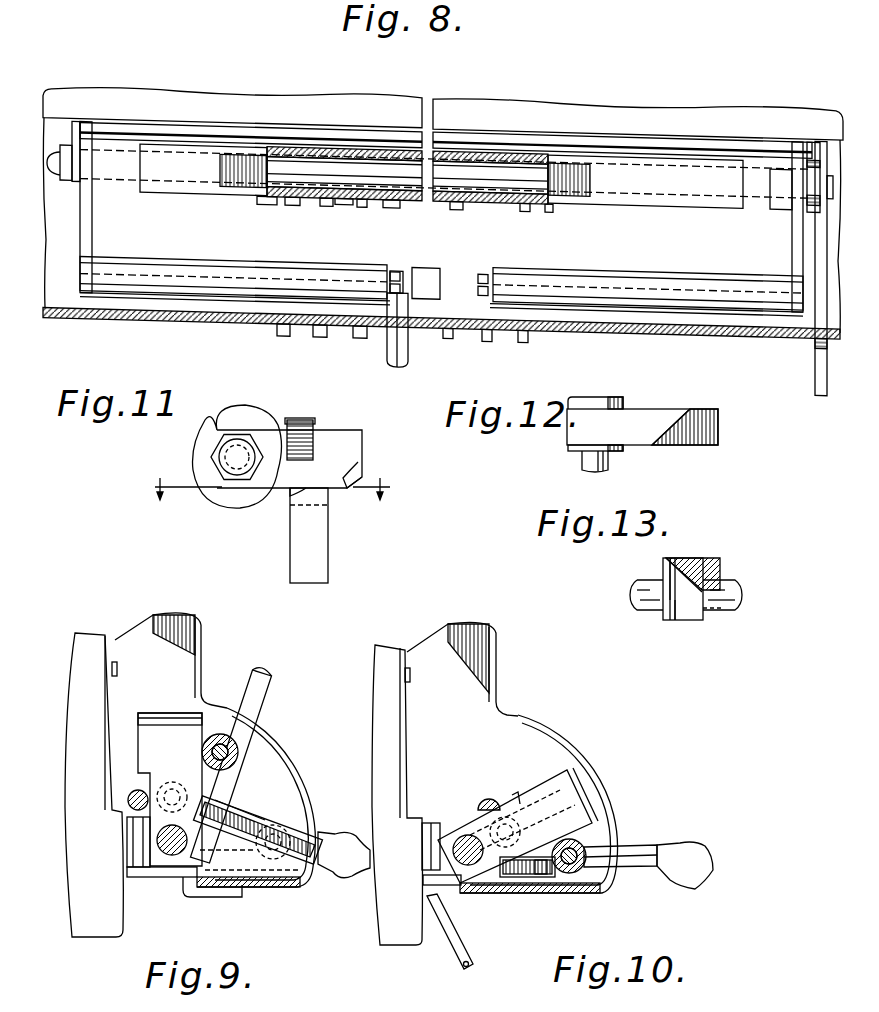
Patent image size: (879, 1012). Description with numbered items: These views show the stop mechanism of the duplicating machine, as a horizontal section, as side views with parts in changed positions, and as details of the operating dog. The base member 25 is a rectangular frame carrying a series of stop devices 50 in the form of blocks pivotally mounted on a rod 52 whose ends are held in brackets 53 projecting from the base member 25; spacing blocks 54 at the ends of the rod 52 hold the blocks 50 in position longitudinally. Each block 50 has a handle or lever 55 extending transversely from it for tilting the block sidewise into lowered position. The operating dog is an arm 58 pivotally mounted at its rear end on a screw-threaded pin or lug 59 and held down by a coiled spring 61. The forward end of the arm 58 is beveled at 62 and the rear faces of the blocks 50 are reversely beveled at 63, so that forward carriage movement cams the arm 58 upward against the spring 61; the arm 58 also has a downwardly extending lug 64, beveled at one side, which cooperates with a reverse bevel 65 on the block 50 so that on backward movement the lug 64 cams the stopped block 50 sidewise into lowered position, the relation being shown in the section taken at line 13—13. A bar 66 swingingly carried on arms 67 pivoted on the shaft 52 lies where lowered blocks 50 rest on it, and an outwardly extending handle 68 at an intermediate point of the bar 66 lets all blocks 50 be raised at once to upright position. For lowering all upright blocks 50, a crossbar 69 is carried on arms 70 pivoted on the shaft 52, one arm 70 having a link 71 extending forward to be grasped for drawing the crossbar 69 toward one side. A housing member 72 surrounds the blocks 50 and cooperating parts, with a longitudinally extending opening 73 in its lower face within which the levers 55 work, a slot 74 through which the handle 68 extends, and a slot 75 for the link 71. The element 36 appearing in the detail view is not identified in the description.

In FIG. 8, the base member 25 is at (231, 106).
In FIG. 9, the base member 25 is at (67, 905).
In FIG. 10, the base member 25 is at (385, 912).
In FIG. 11, the lobe 36 is at (230, 497).
In FIG. 8, the stop device 50 is at (290, 200).
In FIG. 11, the stop device 50 is at (322, 548).
In FIG. 13, the stop device 50 is at (697, 620).
In FIG. 9, the stop device 50 is at (148, 716).
In FIG. 10, the stop device 50 is at (550, 782).
In FIG. 8, the rod 52 is at (530, 183).
In FIG. 13, the rod 52 is at (652, 608).
In FIG. 9, the rod 52 is at (170, 856).
In FIG. 10, the rod 52 is at (462, 838).
In FIG. 8, the bracket 53 is at (114, 184).
In FIG. 9, the bracket 53 is at (134, 840).
In FIG. 10, the bracket 53 is at (430, 825).
In FIG. 8, the spacing block 54 is at (190, 190).
In FIG. 8, the handle or lever 55 is at (315, 334).
In FIG. 9, the handle or lever 55 is at (228, 898).
In FIG. 10, the handle or lever 55 is at (455, 942).
In FIG. 11, the arm 58 is at (350, 437).
In FIG. 12, the arm 58 is at (640, 418).
In FIG. 13, the arm 58 is at (723, 565).
In FIG. 11, the screw-threaded pin or lug 59 is at (219, 452).
In FIG. 12, the screw-threaded pin or lug 59 is at (582, 458).
In FIG. 11, the coiled spring 61 is at (300, 420).
In FIG. 11, the beveled forward end portion 62 is at (360, 476).
In FIG. 12, the beveled forward end portion 62 is at (703, 412).
In FIG. 11, the reversely beveled rear face portion 63 is at (300, 500).
In FIG. 13, the reversely beveled rear face portion 63 is at (672, 622).
In FIG. 9, the reversely beveled rear face portion 63 is at (172, 714).
In FIG. 10, the reversely beveled rear face portion 63 is at (592, 810).
In FIG. 11, the downwardly extending lug 64 is at (300, 490).
In FIG. 12, the downwardly extending lug 64 is at (682, 447).
In FIG. 13, the downwardly extending lug 64 is at (690, 558).
In FIG. 13, the reverse bevel 65 is at (668, 578).
In FIG. 8, the bar 66 is at (228, 263).
In FIG. 9, the bar 66 is at (210, 795).
In FIG. 10, the bar 66 is at (578, 880).
In FIG. 8, the arms 67 is at (90, 232).
In FIG. 9, the arms 67 is at (230, 797).
In FIG. 10, the arms 67 is at (550, 878).
In FIG. 8, the handle 68 is at (410, 348).
In FIG. 9, the handle 68 is at (270, 697).
In FIG. 10, the handle 68 is at (642, 850).
In FIG. 8, the crossbar 69 is at (393, 130).
In FIG. 9, the crossbar 69 is at (128, 800).
In FIG. 10, the crossbar 69 is at (489, 799).
In FIG. 8, the arms 70 is at (80, 158).
In FIG. 9, the arms 70 is at (173, 782).
In FIG. 10, the arms 70 is at (516, 800).
In FIG. 8, the link 71 is at (816, 370).
In FIG. 9, the link 71 is at (288, 838).
In FIG. 10, the link 71 is at (703, 862).
In FIG. 8, the housing member 72 is at (155, 318).
In FIG. 9, the housing member 72 is at (200, 626).
In FIG. 10, the housing member 72 is at (498, 660).
In FIG. 8, the longitudinally extending opening 73 is at (388, 199).
In FIG. 9, the longitudinally extending opening 73 is at (177, 877).
In FIG. 10, the longitudinally extending opening 73 is at (470, 885).
In FIG. 8, the slot 74 is at (392, 322).
In FIG. 9, the slot 74 is at (268, 728).
In FIG. 10, the slot 74 is at (562, 742).
In FIG. 8, the slot 75 is at (812, 330).
In FIG. 11, the section line 13— 13 is at (268, 485).